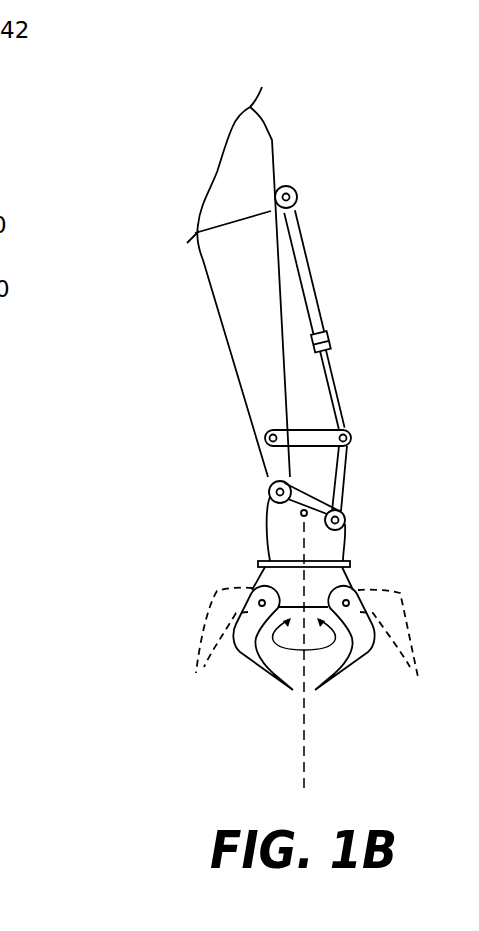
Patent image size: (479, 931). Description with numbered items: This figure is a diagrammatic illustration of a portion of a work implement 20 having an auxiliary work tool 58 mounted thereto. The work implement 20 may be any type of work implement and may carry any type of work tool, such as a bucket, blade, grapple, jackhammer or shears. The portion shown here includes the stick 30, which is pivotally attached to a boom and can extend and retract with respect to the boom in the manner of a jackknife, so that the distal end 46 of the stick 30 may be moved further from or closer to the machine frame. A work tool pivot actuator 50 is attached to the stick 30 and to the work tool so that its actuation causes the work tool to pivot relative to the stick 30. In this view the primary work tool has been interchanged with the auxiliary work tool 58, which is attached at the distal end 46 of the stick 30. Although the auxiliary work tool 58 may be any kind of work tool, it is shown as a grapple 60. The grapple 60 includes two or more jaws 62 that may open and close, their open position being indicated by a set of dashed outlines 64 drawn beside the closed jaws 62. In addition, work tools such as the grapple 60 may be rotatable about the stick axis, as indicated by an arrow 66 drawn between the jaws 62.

The work implement 20 is at (372, 231).
The stick 30 is at (228, 316).
The distal end of stick 46 is at (250, 490).
The work tool pivot actuator 50 is at (318, 313).
The auxiliary work tool 58 is at (158, 632).
The grapple 60 is at (335, 578).
The jaws 62 is at (270, 673).
The dashed outlines 64 is at (212, 602).
The arrow 66 is at (270, 645).